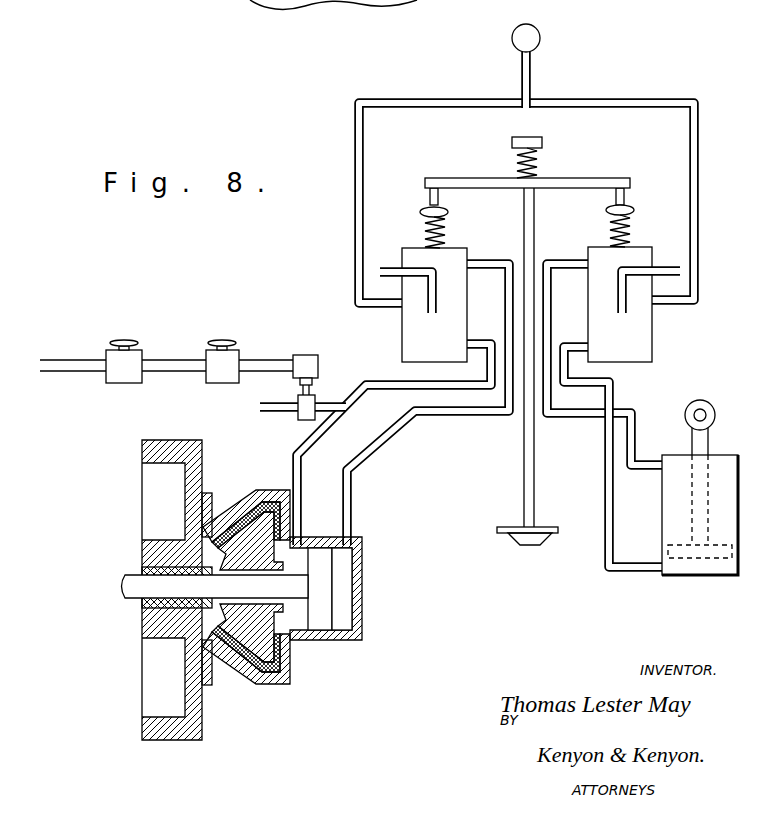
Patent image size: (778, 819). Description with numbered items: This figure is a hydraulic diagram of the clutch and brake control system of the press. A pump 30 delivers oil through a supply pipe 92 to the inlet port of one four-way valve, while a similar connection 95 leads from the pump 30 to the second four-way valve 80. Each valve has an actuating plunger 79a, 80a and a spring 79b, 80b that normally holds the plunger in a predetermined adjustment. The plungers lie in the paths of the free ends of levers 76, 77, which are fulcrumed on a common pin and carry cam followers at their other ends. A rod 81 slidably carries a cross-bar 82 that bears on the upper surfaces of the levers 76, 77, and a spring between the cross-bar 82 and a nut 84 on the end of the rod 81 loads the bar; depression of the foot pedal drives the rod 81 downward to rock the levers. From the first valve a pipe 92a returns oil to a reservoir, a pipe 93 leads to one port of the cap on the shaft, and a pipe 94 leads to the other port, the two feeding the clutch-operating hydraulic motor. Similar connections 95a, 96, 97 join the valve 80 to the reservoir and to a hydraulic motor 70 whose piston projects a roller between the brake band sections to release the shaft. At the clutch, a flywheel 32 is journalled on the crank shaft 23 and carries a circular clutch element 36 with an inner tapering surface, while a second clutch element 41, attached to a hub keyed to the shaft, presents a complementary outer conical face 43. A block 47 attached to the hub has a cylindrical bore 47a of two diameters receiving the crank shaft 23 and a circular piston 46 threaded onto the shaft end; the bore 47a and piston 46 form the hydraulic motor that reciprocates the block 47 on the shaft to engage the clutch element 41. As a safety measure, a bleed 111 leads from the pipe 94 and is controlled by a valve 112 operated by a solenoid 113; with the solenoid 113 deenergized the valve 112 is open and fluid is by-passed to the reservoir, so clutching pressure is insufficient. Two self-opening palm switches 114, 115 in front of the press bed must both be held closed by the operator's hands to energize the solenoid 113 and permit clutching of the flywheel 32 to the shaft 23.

The pump 30 is at (536, 28).
The oil supply pipe 92 is at (361, 100).
The connection 95 is at (640, 100).
The nut 84 is at (543, 141).
The cross-bar 82 is at (556, 180).
The lever 76 is at (428, 195).
The lever 77 is at (622, 197).
The actuating plunger 79a is at (420, 212).
The spring 79b is at (424, 234).
The actuating plunger 80a is at (633, 210).
The spring 80b is at (632, 232).
The four-way fluid valve 80 is at (640, 326).
The rod 81 is at (536, 212).
The pipe 93 is at (481, 259).
The pipe 94 is at (478, 340).
The connection 96 is at (560, 259).
The connection 97 is at (580, 352).
The pipe 92a is at (378, 271).
The connection 95a is at (672, 270).
The hydraulic motor 70 is at (724, 501).
The palm switch 115 is at (128, 343).
The palm switch 114 is at (222, 343).
The solenoid 113 is at (298, 355).
The bleed 111 is at (265, 405).
The valve 112 is at (298, 418).
The flywheel 32 is at (203, 447).
The circular clutch element 36 is at (226, 512).
The outer conical face 43 is at (264, 490).
The circular clutch element 41 is at (270, 535).
The block 47 is at (362, 556).
The cylindrical bore 47a is at (342, 612).
The circular piston 46 is at (323, 622).
The crank shaft 23 is at (135, 592).